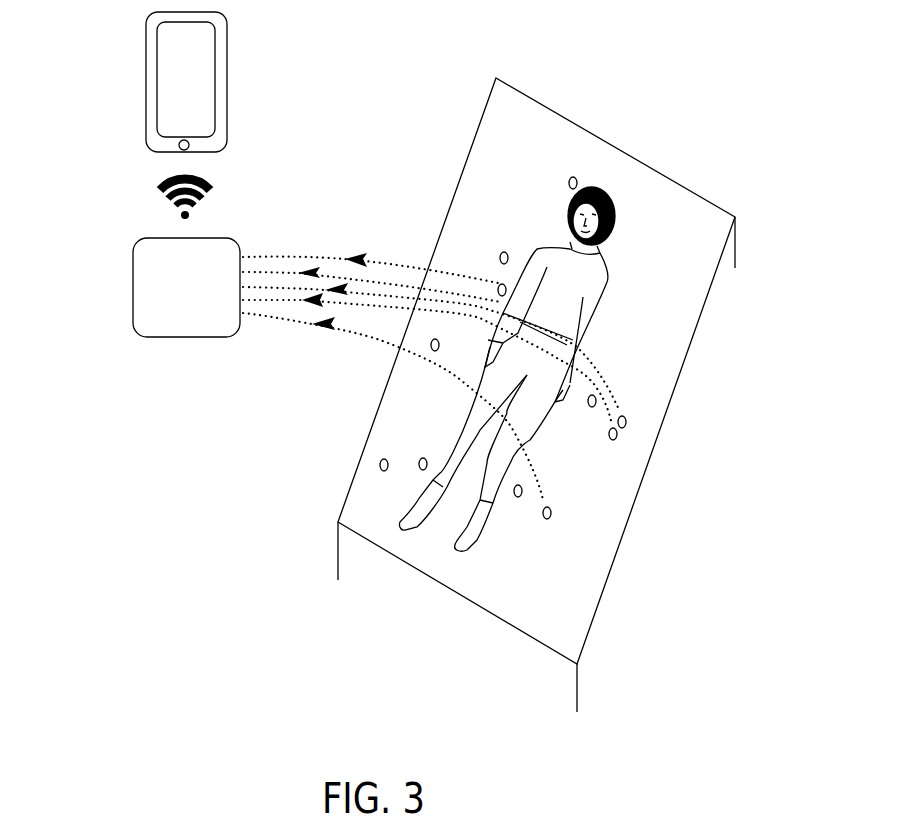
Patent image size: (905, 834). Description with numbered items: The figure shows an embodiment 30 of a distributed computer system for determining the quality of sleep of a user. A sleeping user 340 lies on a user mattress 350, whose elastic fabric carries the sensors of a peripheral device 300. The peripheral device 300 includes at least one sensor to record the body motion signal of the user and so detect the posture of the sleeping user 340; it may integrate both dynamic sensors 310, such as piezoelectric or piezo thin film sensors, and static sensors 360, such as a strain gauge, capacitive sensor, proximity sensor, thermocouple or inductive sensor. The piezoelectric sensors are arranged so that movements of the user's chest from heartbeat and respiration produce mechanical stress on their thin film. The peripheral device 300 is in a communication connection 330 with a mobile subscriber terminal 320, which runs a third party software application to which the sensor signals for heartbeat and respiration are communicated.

The embodiment 30 is at (152, 589).
The peripheral device 300 is at (132, 288).
The dynamic sensors 310 is at (574, 177).
The mobile subscriber terminal 320 is at (145, 81).
The communication connection 330 is at (157, 190).
The sleeping user 340 is at (593, 278).
The user mattress 350 is at (350, 488).
The static sensors 360 is at (628, 418).